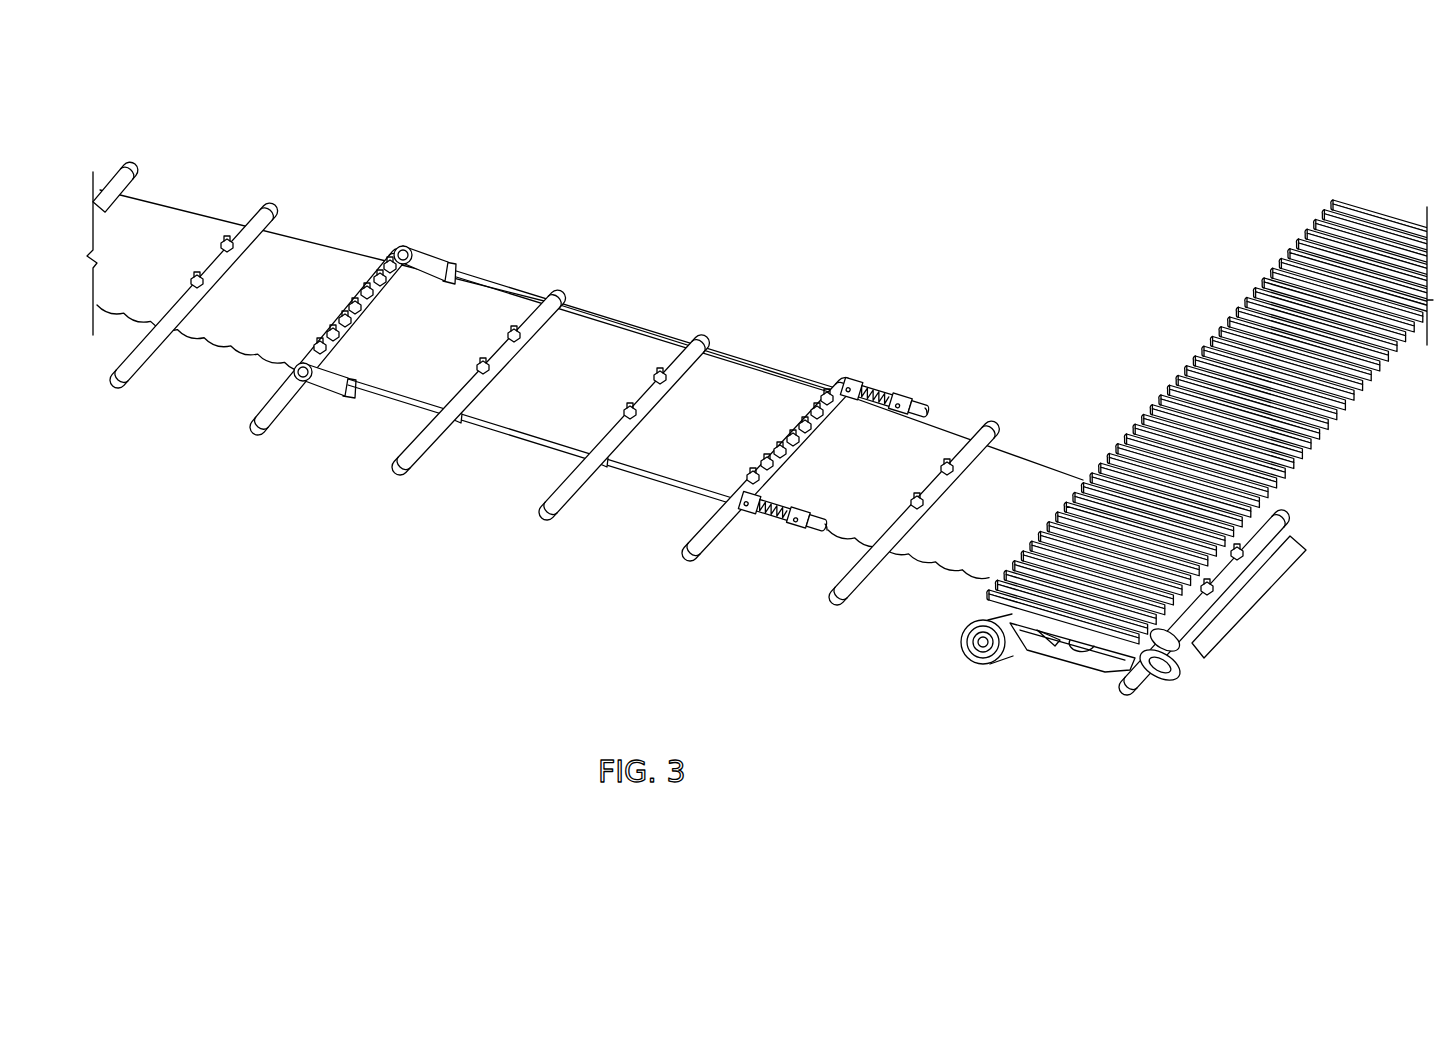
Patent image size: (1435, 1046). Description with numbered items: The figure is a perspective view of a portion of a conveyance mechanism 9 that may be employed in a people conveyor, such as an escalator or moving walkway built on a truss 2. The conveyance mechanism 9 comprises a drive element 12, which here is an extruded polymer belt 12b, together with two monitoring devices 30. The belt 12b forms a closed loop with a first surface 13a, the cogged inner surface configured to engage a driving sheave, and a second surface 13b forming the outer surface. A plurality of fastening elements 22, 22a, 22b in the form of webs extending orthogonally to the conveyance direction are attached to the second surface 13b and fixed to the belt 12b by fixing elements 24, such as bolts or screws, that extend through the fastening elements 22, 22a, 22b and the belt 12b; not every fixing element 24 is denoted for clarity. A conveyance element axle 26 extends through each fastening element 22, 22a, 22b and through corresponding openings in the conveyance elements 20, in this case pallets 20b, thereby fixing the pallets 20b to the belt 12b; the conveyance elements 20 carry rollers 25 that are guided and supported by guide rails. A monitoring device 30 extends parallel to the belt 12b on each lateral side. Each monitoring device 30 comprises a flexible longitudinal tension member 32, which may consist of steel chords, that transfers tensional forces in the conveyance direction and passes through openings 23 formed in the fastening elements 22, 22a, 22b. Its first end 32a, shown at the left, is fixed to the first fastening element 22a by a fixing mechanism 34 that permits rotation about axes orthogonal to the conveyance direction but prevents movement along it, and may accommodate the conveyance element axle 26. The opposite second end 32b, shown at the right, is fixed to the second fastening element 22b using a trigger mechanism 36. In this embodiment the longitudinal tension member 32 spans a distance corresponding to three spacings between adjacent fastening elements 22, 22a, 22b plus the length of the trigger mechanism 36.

The truss 2 is at (1270, 567).
The conveyance mechanism 9 is at (876, 198).
The drive element 12 is at (372, 200).
The belt 12b is at (542, 443).
The first surface 13a is at (940, 585).
The second surface 13b is at (293, 252).
The conveyance elements 20 is at (1246, 240).
The pallets 20b is at (1430, 276).
The fastening elements 22 is at (267, 204).
The first fastening element 22a is at (368, 316).
The second fastening element 22b is at (800, 454).
The openings 23 is at (462, 436).
The fixing elements 24 is at (220, 243).
The rollers 25 is at (990, 668).
The conveyance element axle 26 is at (122, 392).
The monitoring device 30 is at (595, 382).
The longitudinal tension member 32 is at (648, 333).
The first end 32a is at (442, 242).
The second end 32b is at (936, 412).
The fixing mechanism 34 is at (395, 248).
The trigger mechanism 36 is at (903, 383).